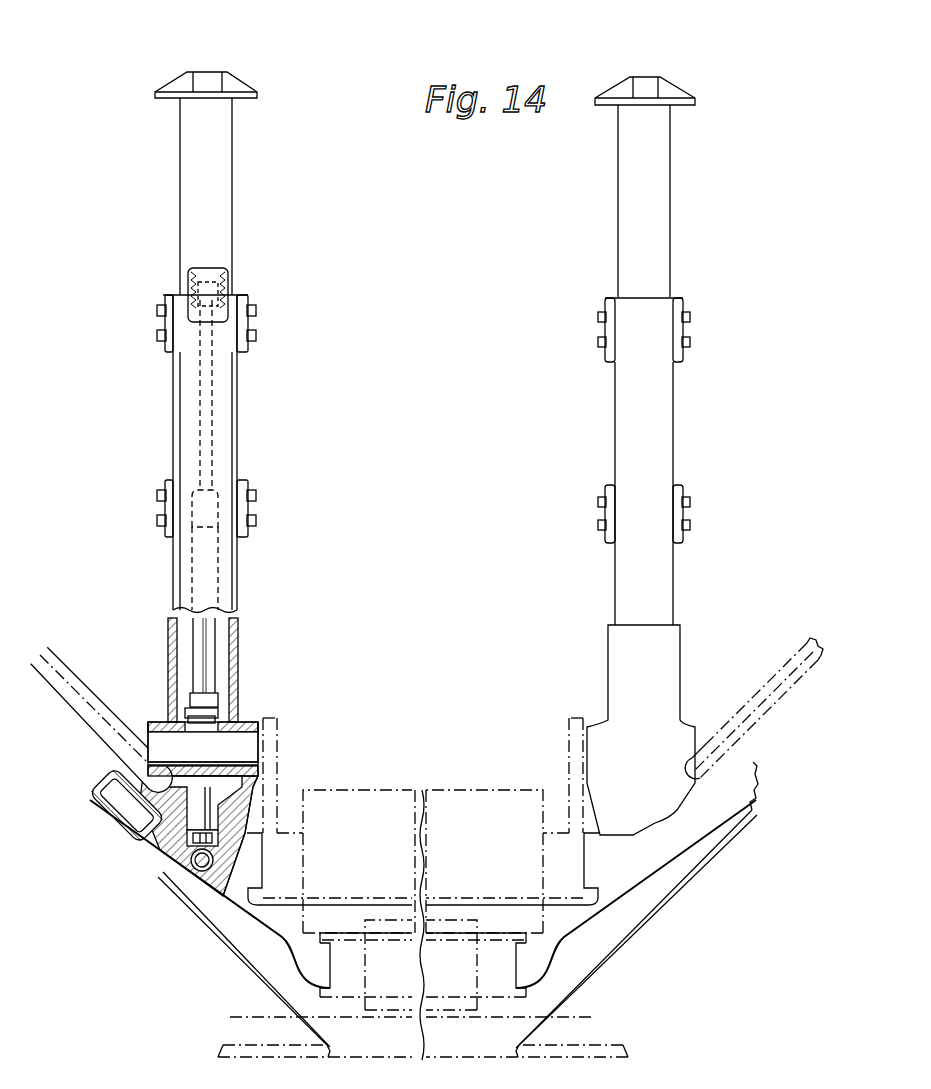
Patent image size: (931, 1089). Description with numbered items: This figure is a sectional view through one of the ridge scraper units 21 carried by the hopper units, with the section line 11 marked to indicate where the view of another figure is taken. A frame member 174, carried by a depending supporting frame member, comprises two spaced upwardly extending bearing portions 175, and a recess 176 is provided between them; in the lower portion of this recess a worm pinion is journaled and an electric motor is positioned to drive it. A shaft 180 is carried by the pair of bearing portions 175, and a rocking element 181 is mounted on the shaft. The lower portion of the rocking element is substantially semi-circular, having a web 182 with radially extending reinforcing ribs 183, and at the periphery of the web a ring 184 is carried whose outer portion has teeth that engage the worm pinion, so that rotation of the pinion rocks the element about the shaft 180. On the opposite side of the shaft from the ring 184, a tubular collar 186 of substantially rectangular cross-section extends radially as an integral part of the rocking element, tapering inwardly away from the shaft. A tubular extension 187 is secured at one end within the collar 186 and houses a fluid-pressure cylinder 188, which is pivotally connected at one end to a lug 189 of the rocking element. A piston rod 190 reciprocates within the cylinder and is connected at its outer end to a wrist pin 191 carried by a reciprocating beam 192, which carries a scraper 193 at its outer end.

The section line 11— 11 is at (233, 277).
The ridge scraper unit 21 is at (241, 454).
The frame member 174 is at (142, 712).
The bearing portions 175 is at (260, 724).
The recess 176 is at (190, 836).
The shaft 180 is at (240, 720).
The rocking element 181 is at (162, 718).
The web 182 is at (228, 788).
The reinforcing ribs 183 is at (182, 793).
The ring 184 is at (218, 835).
The tubular collar 186 is at (240, 640).
The tubular extension 187 is at (237, 562).
The fluid-pressure cylinder 188 is at (205, 632).
The lug 189 is at (222, 745).
The piston rod 190 is at (212, 412).
The wrist pin 191 is at (190, 272).
The reciprocating beam 192 is at (238, 196).
The scraper 193 is at (180, 86).